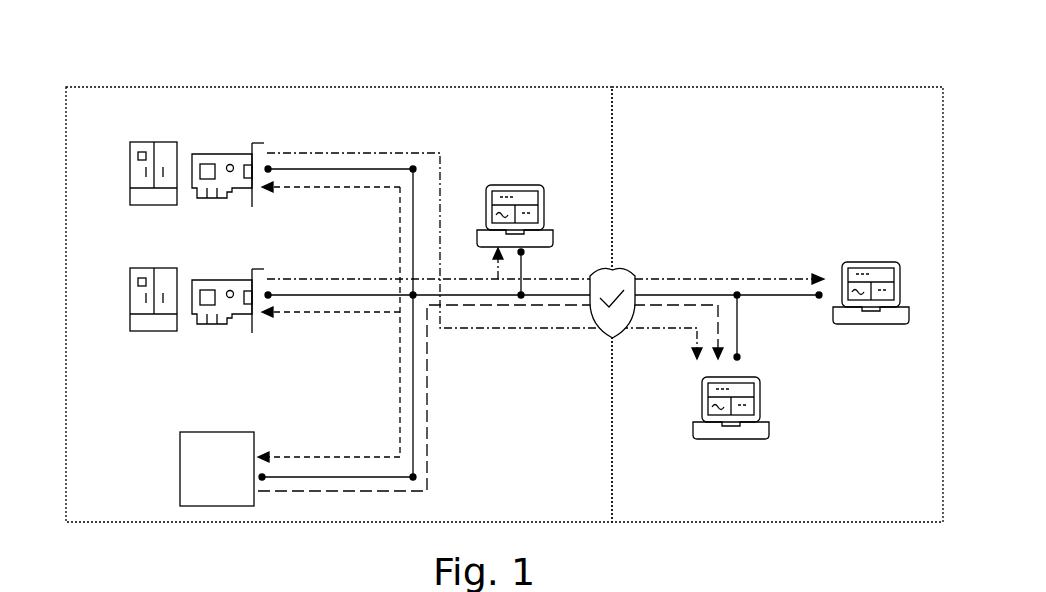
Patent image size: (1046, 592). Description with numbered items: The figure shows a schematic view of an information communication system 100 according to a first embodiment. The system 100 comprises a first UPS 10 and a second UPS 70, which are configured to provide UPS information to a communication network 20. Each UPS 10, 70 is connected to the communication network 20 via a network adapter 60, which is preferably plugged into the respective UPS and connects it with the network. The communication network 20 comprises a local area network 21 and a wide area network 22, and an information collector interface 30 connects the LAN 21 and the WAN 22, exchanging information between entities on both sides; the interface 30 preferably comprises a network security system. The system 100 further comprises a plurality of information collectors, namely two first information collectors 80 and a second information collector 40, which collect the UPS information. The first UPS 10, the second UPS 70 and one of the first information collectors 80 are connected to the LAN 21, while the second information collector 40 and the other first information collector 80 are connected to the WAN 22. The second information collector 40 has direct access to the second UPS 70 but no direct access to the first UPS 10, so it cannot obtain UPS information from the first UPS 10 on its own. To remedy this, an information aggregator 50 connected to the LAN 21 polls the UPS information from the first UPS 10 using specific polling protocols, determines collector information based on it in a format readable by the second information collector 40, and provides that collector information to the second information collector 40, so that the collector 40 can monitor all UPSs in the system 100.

The information communication system 100 is at (742, 81).
The communication network 20 is at (373, 168).
The local area network (LAN) 21 is at (339, 304).
The wide area network (WAN) 22 is at (777, 304).
The second UPS 70 is at (131, 173).
The first UPS 10 is at (132, 299).
The network adapter 60 is at (228, 224).
The information aggregator 50 is at (217, 450).
The first information collector 80 is at (693, 237).
The information collector interface 30 is at (624, 286).
The second information collector 40 is at (731, 431).